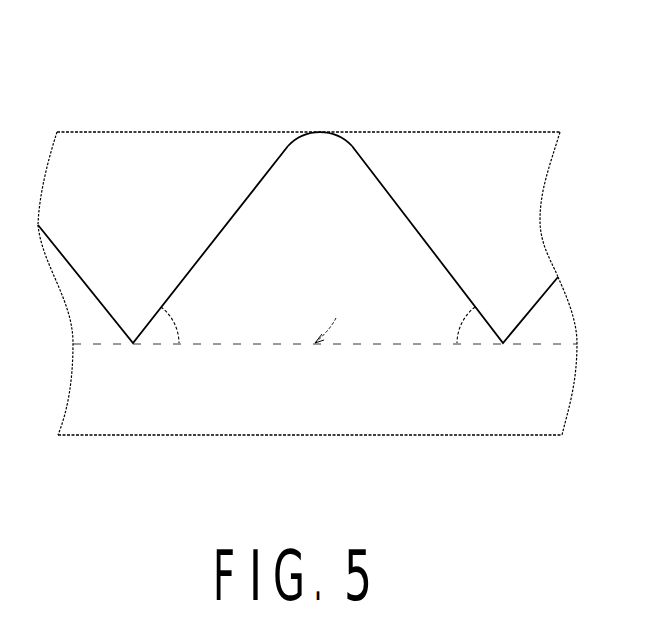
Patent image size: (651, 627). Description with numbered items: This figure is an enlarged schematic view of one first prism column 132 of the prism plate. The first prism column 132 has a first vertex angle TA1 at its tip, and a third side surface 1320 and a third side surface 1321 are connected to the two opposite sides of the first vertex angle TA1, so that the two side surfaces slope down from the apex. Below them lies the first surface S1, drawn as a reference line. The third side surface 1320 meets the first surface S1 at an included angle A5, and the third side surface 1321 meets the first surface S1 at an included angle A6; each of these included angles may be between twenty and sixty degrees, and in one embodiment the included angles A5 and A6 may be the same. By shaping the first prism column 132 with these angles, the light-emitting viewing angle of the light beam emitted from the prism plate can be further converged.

The first prism column 132 is at (258, 308).
The third side surface 1320 is at (235, 210).
The third side surface 1321 is at (400, 210).
The first vertex angle TA1 is at (316, 133).
The included angle A5 is at (177, 331).
The included angle A6 is at (459, 331).
The first surface S1 is at (343, 333).